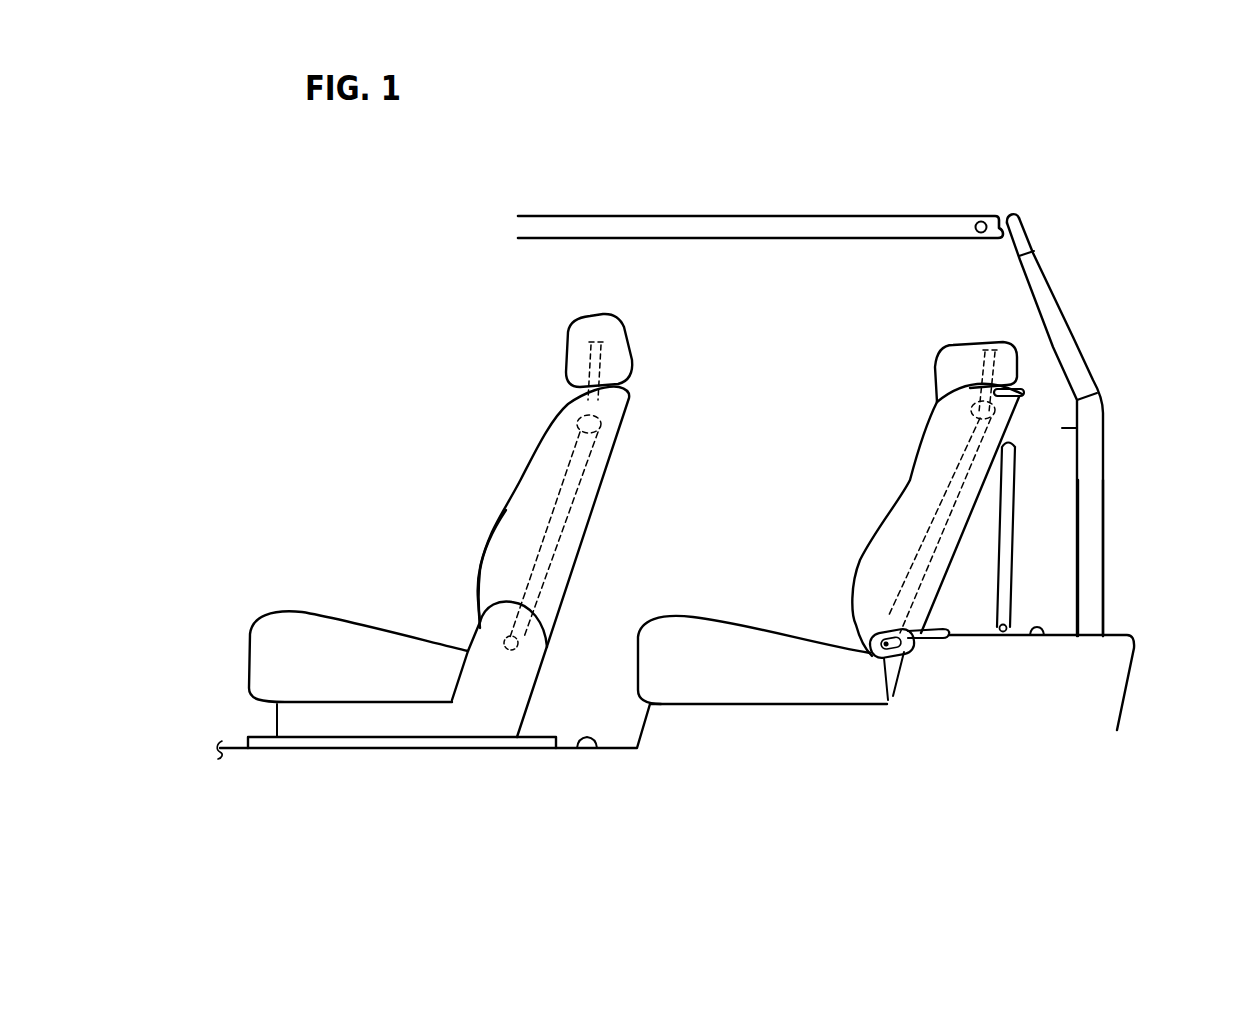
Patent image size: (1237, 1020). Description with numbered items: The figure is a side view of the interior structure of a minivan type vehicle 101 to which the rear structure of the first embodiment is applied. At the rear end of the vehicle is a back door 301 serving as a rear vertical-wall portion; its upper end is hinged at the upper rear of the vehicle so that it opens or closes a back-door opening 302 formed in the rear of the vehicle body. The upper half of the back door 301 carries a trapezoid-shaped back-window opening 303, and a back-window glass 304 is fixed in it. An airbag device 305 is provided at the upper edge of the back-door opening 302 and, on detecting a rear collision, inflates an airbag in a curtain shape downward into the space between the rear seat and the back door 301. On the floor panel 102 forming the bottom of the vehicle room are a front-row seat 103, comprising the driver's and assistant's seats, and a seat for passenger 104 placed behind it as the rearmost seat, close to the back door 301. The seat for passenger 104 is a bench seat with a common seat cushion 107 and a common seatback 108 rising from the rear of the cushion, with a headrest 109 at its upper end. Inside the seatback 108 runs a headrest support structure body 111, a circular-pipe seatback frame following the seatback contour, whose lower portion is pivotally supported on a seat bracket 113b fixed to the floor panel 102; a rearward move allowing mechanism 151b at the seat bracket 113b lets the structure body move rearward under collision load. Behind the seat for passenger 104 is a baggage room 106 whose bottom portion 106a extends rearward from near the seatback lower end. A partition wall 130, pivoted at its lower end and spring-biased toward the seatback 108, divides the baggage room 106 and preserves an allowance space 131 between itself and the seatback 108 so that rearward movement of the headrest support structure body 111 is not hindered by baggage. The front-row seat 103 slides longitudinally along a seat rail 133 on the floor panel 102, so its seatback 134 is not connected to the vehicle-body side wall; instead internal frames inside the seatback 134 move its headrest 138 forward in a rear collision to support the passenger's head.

The vehicle 101 is at (778, 162).
The floor panel 102 is at (593, 749).
The front-row seat 103 is at (440, 525).
The seat for passenger 104 is at (831, 554).
The baggage room 106 is at (1041, 647).
The bottom portion of baggage room 106a is at (1044, 637).
The seat cushion 107 is at (770, 696).
The seatback 108 is at (862, 546).
The headrest 109 is at (934, 373).
The headrest support structure body 111 is at (930, 530).
The seat bracket 113b is at (907, 650).
The partition wall 130 is at (1010, 517).
The allowance space 131 is at (992, 619).
The seat rail 133 is at (442, 743).
The seatback 134 is at (480, 568).
The headrest 138 is at (566, 348).
The rearward move allowing mechanism 151b is at (886, 700).
The back door 301 is at (1101, 462).
The back-door opening 302 is at (1095, 426).
The back-window opening 303 is at (1087, 393).
The back-window glass 304 is at (1062, 325).
The airbag device 305 is at (982, 218).